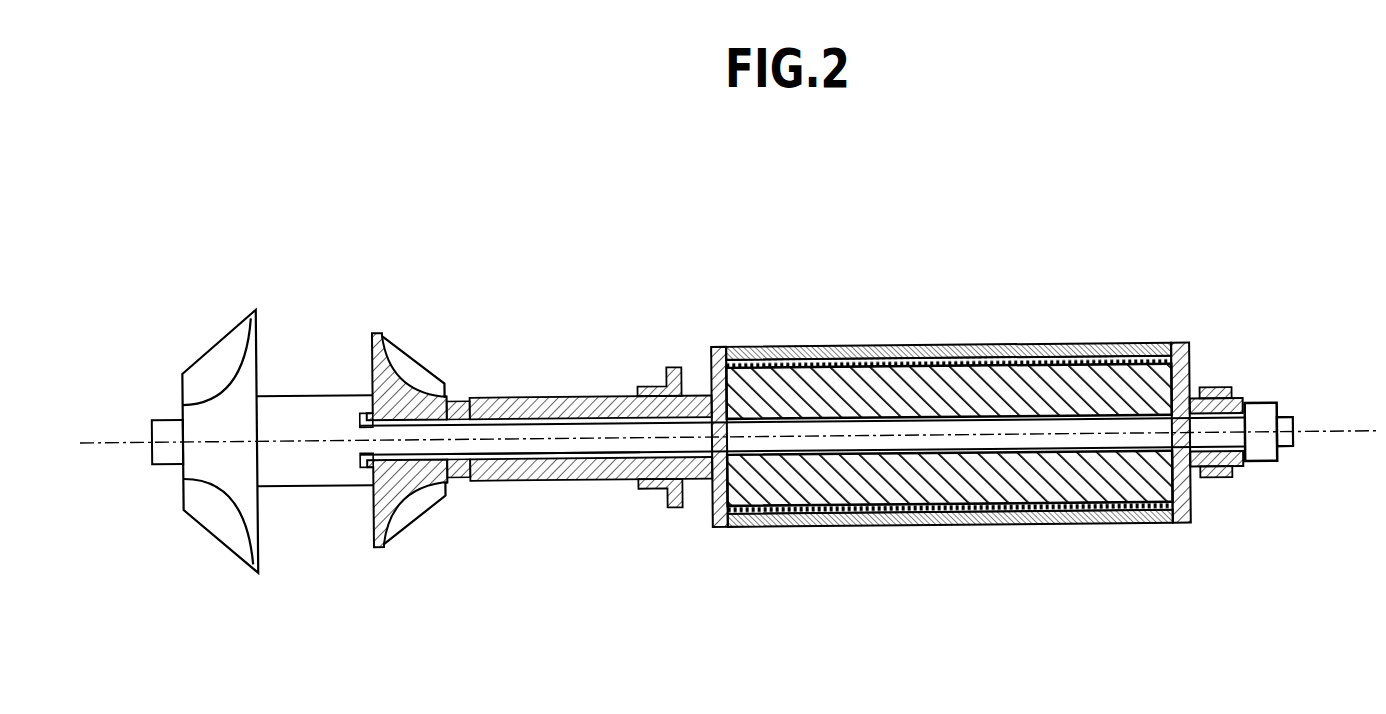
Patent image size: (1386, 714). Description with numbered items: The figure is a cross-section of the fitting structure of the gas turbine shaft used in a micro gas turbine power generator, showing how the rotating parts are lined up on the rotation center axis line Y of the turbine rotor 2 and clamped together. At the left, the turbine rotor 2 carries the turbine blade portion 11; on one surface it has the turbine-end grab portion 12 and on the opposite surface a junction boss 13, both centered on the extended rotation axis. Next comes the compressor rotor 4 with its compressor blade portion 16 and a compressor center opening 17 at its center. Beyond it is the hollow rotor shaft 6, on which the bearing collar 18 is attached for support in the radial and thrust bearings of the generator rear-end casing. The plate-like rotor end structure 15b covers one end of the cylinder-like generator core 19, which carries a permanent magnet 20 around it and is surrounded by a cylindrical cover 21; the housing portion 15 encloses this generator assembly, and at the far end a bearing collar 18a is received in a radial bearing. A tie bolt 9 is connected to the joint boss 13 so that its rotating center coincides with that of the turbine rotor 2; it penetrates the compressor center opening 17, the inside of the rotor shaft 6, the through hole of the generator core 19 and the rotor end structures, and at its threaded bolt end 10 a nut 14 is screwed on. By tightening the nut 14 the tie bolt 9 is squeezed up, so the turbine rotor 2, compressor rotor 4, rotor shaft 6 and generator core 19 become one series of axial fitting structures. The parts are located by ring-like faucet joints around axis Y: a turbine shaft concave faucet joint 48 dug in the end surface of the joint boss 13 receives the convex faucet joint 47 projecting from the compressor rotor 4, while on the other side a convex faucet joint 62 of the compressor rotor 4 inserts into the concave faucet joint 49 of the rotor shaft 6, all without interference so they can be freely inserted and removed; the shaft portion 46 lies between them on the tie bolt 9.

The turbine rotor 2 is at (248, 337).
The compressor rotor 4 is at (378, 340).
The rotor shaft 6 is at (560, 395).
The tie bolt 9 is at (562, 440).
The bolt end 10 is at (1283, 447).
The turbine blade portion 11 is at (225, 357).
The turbine-end grab portion 12 is at (168, 452).
The junction boss 13 is at (281, 420).
The nut 14 is at (1257, 407).
The housing 15 is at (1182, 340).
The rotor end structure 15b is at (724, 348).
The compressor blade portion 16 is at (420, 367).
The compressor center opening 17 is at (407, 427).
The bearing collar 18 is at (690, 393).
The bearing collar 18a is at (1210, 385).
The generator core 19 is at (1070, 382).
The permanent magnet 20 is at (972, 345).
The cover 21 is at (902, 343).
The shaft section 46 is at (512, 447).
The convex faucet joint 47 is at (363, 473).
The turbine shaft concave faucet joint 48 is at (363, 421).
The concave faucet joint 49 is at (471, 395).
The convex faucet joint 62 is at (470, 483).
The rotation center axis line Y is at (117, 443).